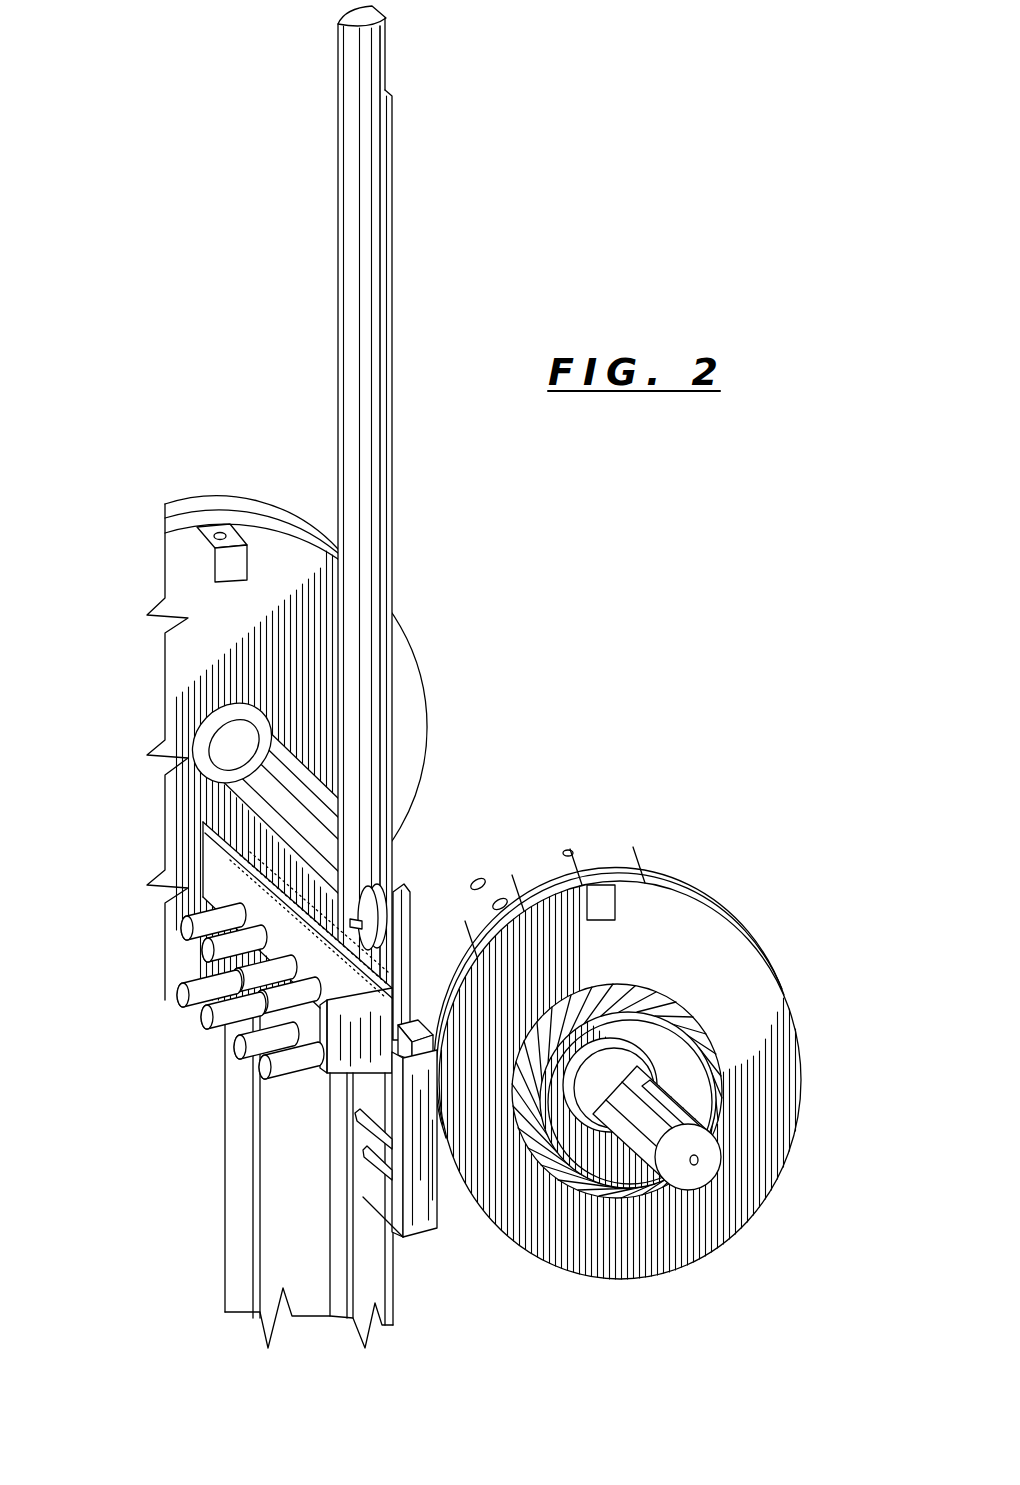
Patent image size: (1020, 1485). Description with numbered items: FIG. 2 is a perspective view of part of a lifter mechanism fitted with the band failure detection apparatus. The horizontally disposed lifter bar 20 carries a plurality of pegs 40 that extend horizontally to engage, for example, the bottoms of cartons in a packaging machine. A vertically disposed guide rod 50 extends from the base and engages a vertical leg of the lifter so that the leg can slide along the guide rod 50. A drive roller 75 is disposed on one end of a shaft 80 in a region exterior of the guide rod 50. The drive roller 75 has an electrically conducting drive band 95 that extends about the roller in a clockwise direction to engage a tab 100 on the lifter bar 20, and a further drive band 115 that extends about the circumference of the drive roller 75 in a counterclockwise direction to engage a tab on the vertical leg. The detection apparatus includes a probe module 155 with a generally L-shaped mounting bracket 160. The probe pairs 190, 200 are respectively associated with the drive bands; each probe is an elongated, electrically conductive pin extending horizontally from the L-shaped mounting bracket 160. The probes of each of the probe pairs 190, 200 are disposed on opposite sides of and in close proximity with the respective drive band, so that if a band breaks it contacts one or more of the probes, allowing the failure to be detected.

The lifter bar 20 is at (222, 892).
The pegs 40 is at (200, 995).
The guide rods 50 is at (375, 205).
The drive roller 75 is at (750, 1022).
The shaft 80 is at (252, 786).
The drive band 95 is at (430, 1008).
The tabs 100 is at (393, 857).
The further drive band 115 is at (372, 1103).
The probe module 155 is at (440, 1182).
The L-shaped mounting bracket 160 is at (430, 1234).
The probe pair 190 is at (433, 1030).
The probe pair 200 is at (357, 1130).